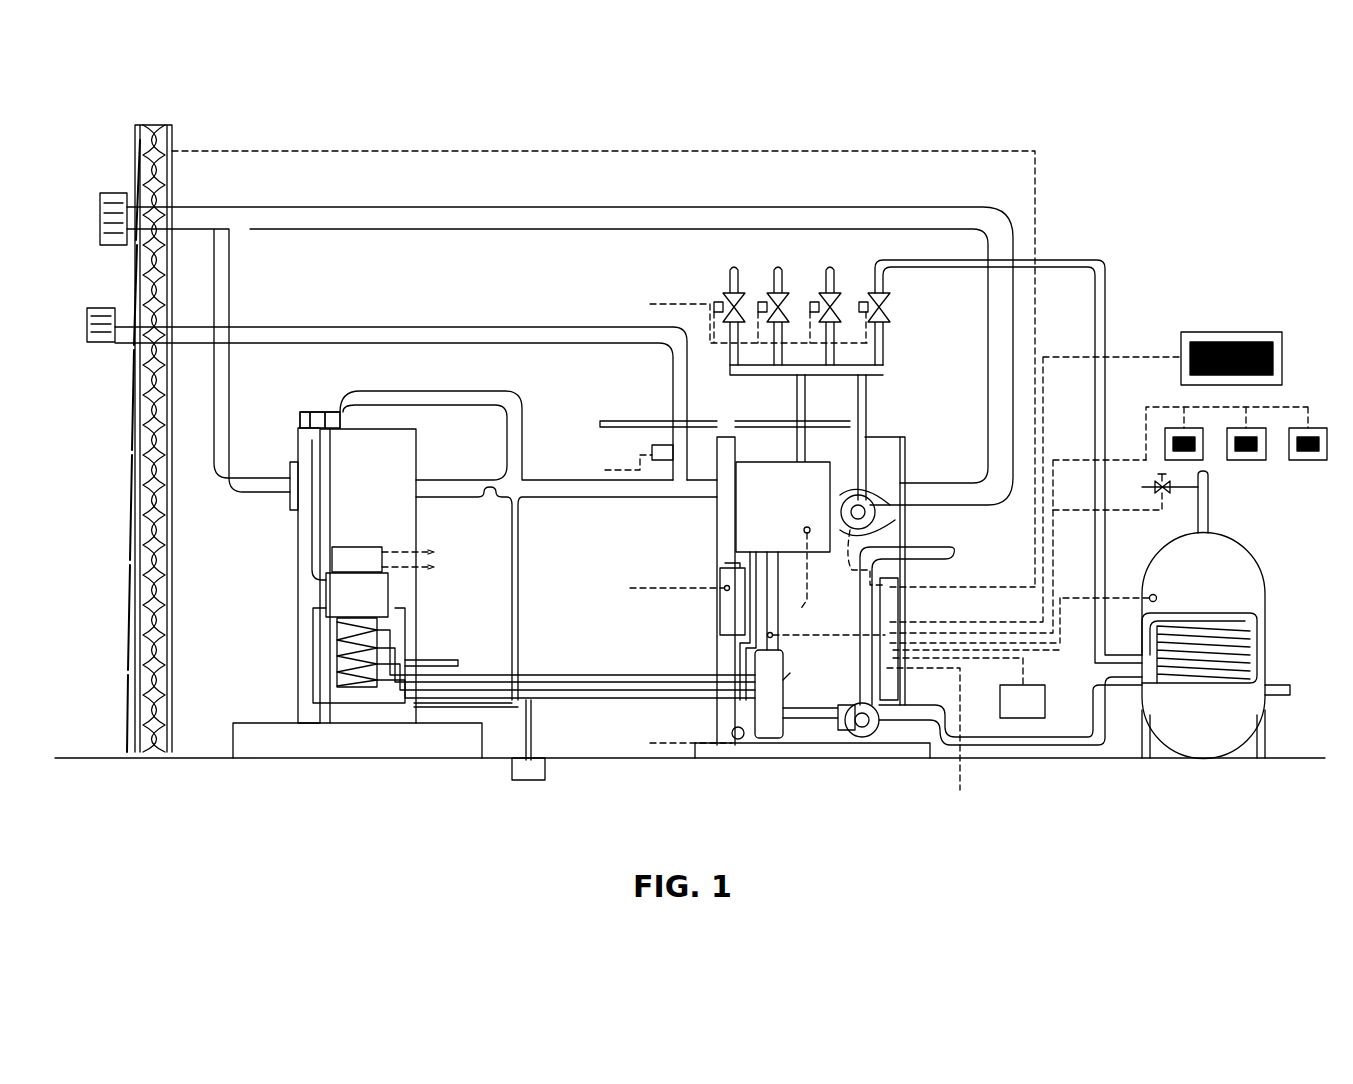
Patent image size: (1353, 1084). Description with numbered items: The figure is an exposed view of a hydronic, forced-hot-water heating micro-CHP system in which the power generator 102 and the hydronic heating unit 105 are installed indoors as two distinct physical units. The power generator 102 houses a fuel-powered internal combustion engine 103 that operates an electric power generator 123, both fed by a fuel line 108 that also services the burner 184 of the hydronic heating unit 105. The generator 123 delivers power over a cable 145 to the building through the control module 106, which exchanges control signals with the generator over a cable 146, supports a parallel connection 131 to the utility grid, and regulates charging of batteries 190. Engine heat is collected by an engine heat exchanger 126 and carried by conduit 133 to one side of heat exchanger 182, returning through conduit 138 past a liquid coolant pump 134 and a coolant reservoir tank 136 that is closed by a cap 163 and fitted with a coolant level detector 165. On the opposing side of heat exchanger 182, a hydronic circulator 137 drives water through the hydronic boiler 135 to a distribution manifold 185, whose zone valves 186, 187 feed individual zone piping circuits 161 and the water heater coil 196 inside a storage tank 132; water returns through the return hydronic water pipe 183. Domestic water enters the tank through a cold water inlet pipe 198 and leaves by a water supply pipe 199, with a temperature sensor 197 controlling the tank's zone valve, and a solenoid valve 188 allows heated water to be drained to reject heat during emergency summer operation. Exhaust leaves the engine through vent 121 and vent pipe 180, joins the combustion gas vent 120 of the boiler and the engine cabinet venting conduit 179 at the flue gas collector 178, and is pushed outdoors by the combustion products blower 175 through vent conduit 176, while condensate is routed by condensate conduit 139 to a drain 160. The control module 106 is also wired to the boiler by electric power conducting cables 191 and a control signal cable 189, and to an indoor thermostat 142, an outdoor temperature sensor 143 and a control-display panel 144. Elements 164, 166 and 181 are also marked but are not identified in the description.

The power generator 102 is at (425, 470).
The engine 103 is at (359, 638).
The hydronic heating unit 105 is at (910, 437).
The control module 106 is at (892, 680).
The fuel line 108 is at (632, 421).
The combustion gas vent 120 is at (722, 487).
The vent 121 is at (307, 413).
The electric power generator 123 is at (345, 547).
The engine heat exchanger 126 is at (332, 656).
The parallel connection 131 is at (965, 732).
The storage tank 132 is at (1263, 577).
The conduit 133 is at (590, 673).
The liquid coolant pump 134 is at (732, 730).
The hydronic boiler 135 is at (750, 520).
The coolant reservoir tank 136 is at (696, 599).
The hydronic circulator 137 is at (878, 737).
The conduit 138 is at (642, 700).
The condensate conduit 139 is at (533, 720).
The thermostat 142 is at (1311, 428).
The outdoor temperature sensor 143 is at (248, 150).
The control-display panel 144 is at (1236, 332).
The cable 145 is at (430, 552).
The cable 146 is at (430, 567).
The drain 160 is at (546, 771).
The zone piping circuits 161 is at (879, 264).
The cap 163 is at (722, 568).
The boiler outlet pipe 164 is at (718, 660).
The coolant level detector 165 is at (735, 590).
The temperature sensor 166 is at (805, 642).
The combustion products blower 175 is at (652, 452).
The vent conduit 176 is at (673, 385).
The flue gas collector 178 is at (700, 485).
The engine cabinet venting conduit 179 is at (482, 502).
The vent pipe 180 is at (440, 391).
The exhaust vent duct 181 is at (340, 207).
The heat exchanger 182 is at (772, 738).
The return hydronic water pipe 183 is at (948, 547).
The burner 184 is at (880, 505).
The distribution manifold 185 is at (870, 378).
The zone valve 186 is at (807, 582).
The zone valves 187 is at (893, 305).
The solenoid valve 188 is at (1160, 498).
The control signal cable 189 is at (858, 528).
The batteries 190 is at (1010, 685).
The electric power conducting cables 191 is at (851, 567).
The water heater coil 196 is at (1202, 613).
The temperature sensor 197 is at (1151, 594).
The cold water inlet pipe 198 is at (1286, 685).
The water supply pipe 199 is at (1210, 523).